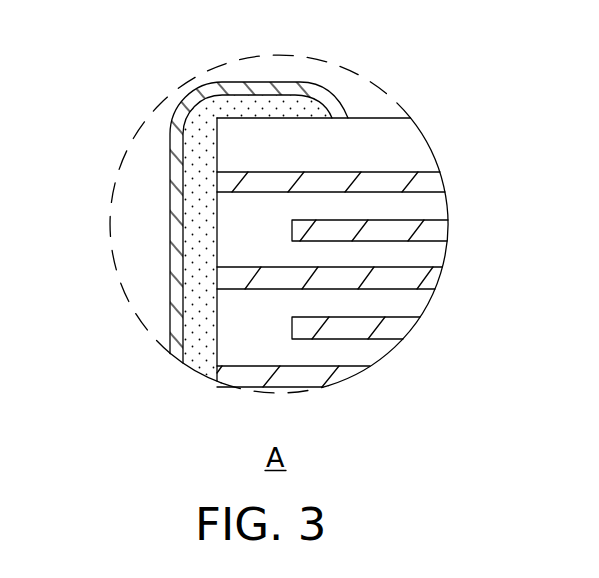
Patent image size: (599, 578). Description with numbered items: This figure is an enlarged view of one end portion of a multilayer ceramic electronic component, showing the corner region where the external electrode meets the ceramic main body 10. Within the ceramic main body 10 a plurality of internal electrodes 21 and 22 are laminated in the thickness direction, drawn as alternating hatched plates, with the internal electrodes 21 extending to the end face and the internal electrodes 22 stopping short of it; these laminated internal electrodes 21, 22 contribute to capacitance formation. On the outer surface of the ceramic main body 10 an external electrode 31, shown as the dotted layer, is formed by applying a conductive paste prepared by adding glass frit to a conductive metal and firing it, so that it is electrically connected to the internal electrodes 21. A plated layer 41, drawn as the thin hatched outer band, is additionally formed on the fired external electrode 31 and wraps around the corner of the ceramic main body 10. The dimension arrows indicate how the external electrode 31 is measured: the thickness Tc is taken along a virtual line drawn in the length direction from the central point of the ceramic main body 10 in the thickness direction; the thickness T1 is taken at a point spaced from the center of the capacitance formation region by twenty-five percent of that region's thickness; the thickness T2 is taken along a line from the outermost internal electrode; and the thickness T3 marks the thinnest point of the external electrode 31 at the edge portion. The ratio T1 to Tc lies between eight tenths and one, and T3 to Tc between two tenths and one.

The ceramic main body 10 is at (372, 206).
The internal electrode 21 is at (433, 183).
The internal electrode 22 is at (438, 231).
The external electrode 31 is at (197, 337).
The plated layer 41 is at (178, 348).
The thickness T1 is at (270, 266).
The thickness T2 is at (250, 171).
The thickness T3 is at (247, 148).
The thickness Tc is at (270, 311).